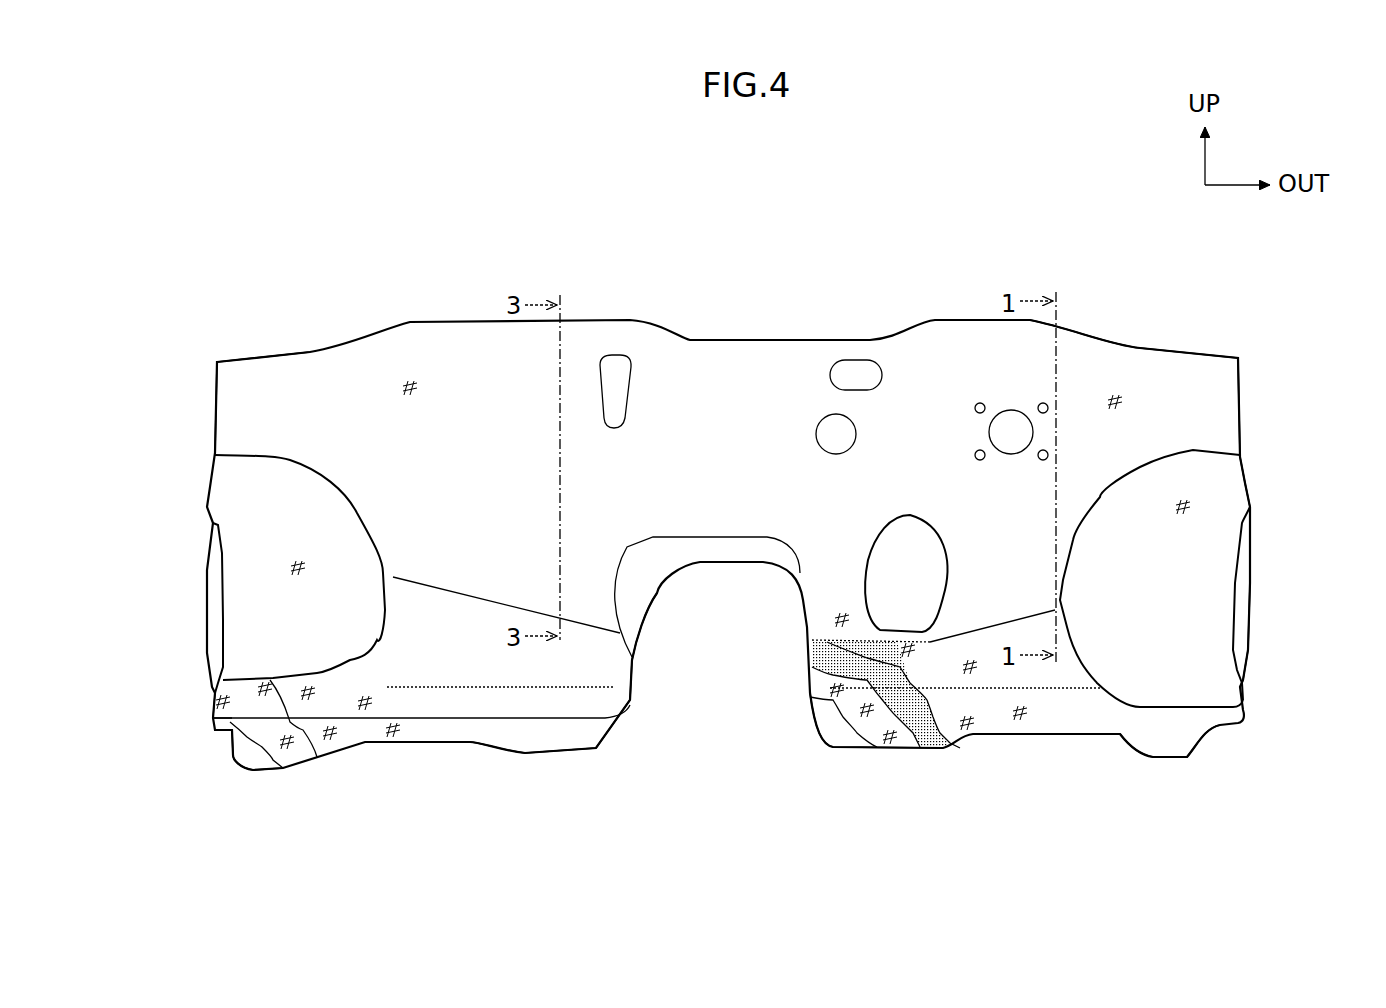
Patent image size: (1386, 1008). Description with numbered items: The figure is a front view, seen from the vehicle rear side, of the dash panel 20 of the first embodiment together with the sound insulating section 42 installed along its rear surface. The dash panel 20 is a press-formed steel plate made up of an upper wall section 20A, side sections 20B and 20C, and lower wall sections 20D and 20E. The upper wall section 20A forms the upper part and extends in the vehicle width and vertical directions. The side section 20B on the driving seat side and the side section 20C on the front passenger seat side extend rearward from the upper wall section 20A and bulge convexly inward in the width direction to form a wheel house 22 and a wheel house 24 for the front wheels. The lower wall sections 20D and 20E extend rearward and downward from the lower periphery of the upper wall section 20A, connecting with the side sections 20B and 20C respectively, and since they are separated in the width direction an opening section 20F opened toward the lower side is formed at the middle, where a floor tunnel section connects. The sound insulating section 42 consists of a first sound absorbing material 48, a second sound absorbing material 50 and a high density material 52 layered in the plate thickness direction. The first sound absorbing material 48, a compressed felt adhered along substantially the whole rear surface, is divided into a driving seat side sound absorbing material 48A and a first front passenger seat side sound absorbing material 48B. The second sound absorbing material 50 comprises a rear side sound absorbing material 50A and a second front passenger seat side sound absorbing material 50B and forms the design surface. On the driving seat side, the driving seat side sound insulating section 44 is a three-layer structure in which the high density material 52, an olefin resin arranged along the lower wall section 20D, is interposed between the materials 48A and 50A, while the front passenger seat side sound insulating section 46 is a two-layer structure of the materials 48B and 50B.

The dash panel 20 is at (1256, 530).
The upper wall section 20A is at (1133, 363).
The side section 20B is at (1240, 602).
The side section 20C is at (215, 577).
The lower wall section 20D is at (840, 733).
The lower wall section 20E is at (252, 760).
The opening section 20F is at (657, 603).
The wheel house 22 is at (1265, 472).
The wheel house 24 is at (176, 425).
The sound insulating section 42 is at (821, 258).
The driving seat side sound insulating section 44 is at (1220, 382).
The front passenger seat side sound insulating section 46 is at (232, 390).
The first sound absorbing material 48 is at (304, 752).
The driving seat side sound absorbing material 48A is at (910, 747).
The first front passenger seat side sound absorbing material 48B is at (213, 708).
The second sound absorbing material 50 is at (414, 730).
The rear side sound absorbing material 50A is at (1125, 735).
The second front passenger seat side sound absorbing material 50B is at (600, 730).
The high density material 52 is at (945, 748).